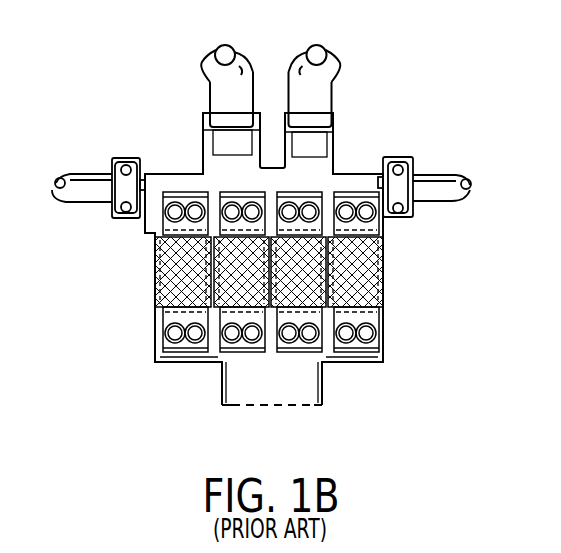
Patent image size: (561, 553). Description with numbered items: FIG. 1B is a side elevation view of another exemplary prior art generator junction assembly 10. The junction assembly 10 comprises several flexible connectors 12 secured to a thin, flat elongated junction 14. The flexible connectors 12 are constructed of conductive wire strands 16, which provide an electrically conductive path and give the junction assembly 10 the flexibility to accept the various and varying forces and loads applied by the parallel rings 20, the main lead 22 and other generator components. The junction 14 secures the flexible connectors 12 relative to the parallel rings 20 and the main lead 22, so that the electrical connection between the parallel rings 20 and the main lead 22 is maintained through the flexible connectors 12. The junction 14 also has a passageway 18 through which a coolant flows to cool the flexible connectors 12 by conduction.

The junction assembly 10 is at (372, 92).
The flexible connectors 12 is at (185, 194).
The junction 14 is at (213, 172).
The conductive wire strands 16 is at (373, 277).
The passageway 18 is at (443, 187).
The parallel rings 20 is at (300, 70).
The main lead 22 is at (247, 392).